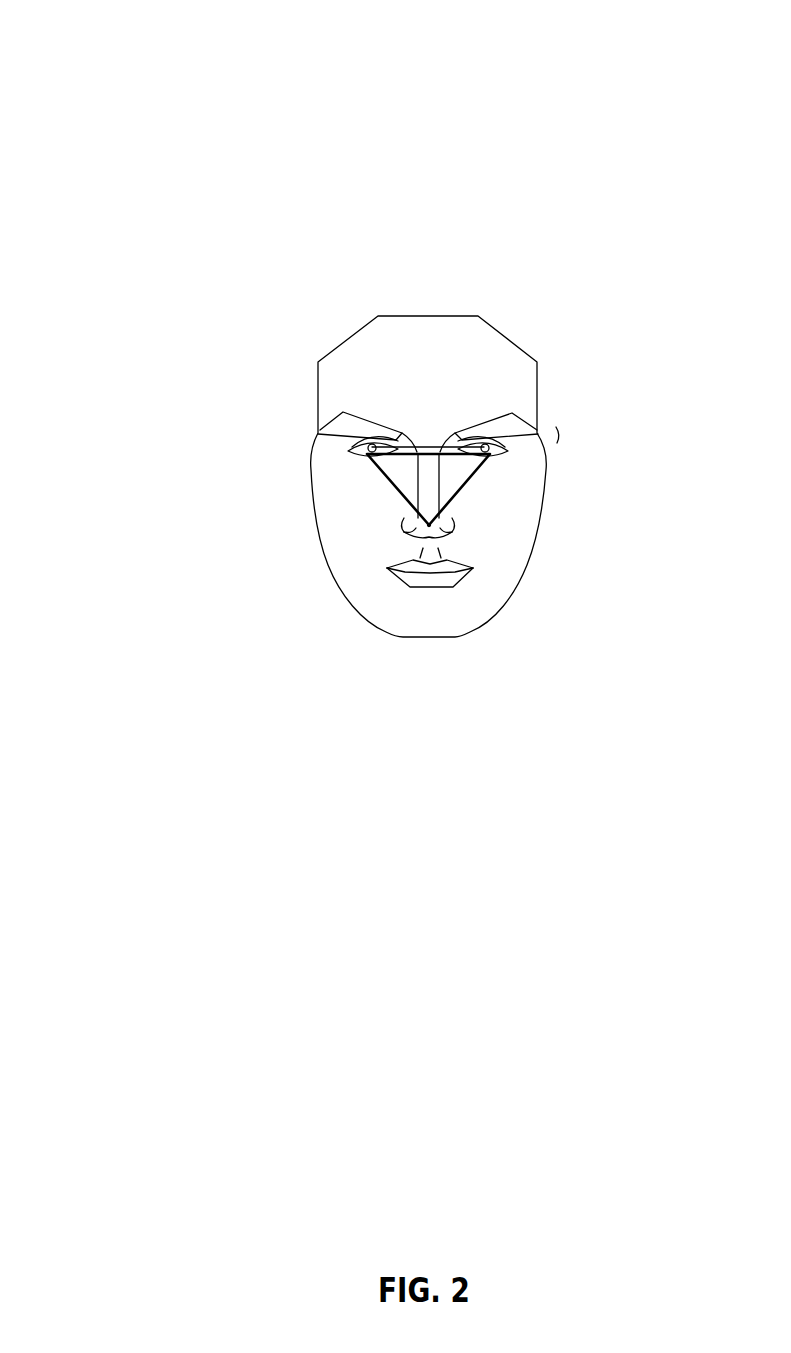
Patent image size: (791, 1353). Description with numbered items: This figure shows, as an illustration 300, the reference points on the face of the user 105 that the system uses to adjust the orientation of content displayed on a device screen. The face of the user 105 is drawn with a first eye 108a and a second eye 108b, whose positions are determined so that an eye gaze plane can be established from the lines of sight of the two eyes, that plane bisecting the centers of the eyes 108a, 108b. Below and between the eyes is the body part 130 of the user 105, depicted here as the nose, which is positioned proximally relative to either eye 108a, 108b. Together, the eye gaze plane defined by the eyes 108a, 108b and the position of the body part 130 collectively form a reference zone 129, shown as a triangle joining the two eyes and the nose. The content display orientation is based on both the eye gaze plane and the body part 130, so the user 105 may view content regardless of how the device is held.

The face image 300 is at (642, 77).
The user 105 is at (435, 637).
The first eye 108a is at (372, 447).
The second eye 108b is at (485, 447).
The reference zone 129 is at (396, 489).
The body part 130 is at (429, 525).